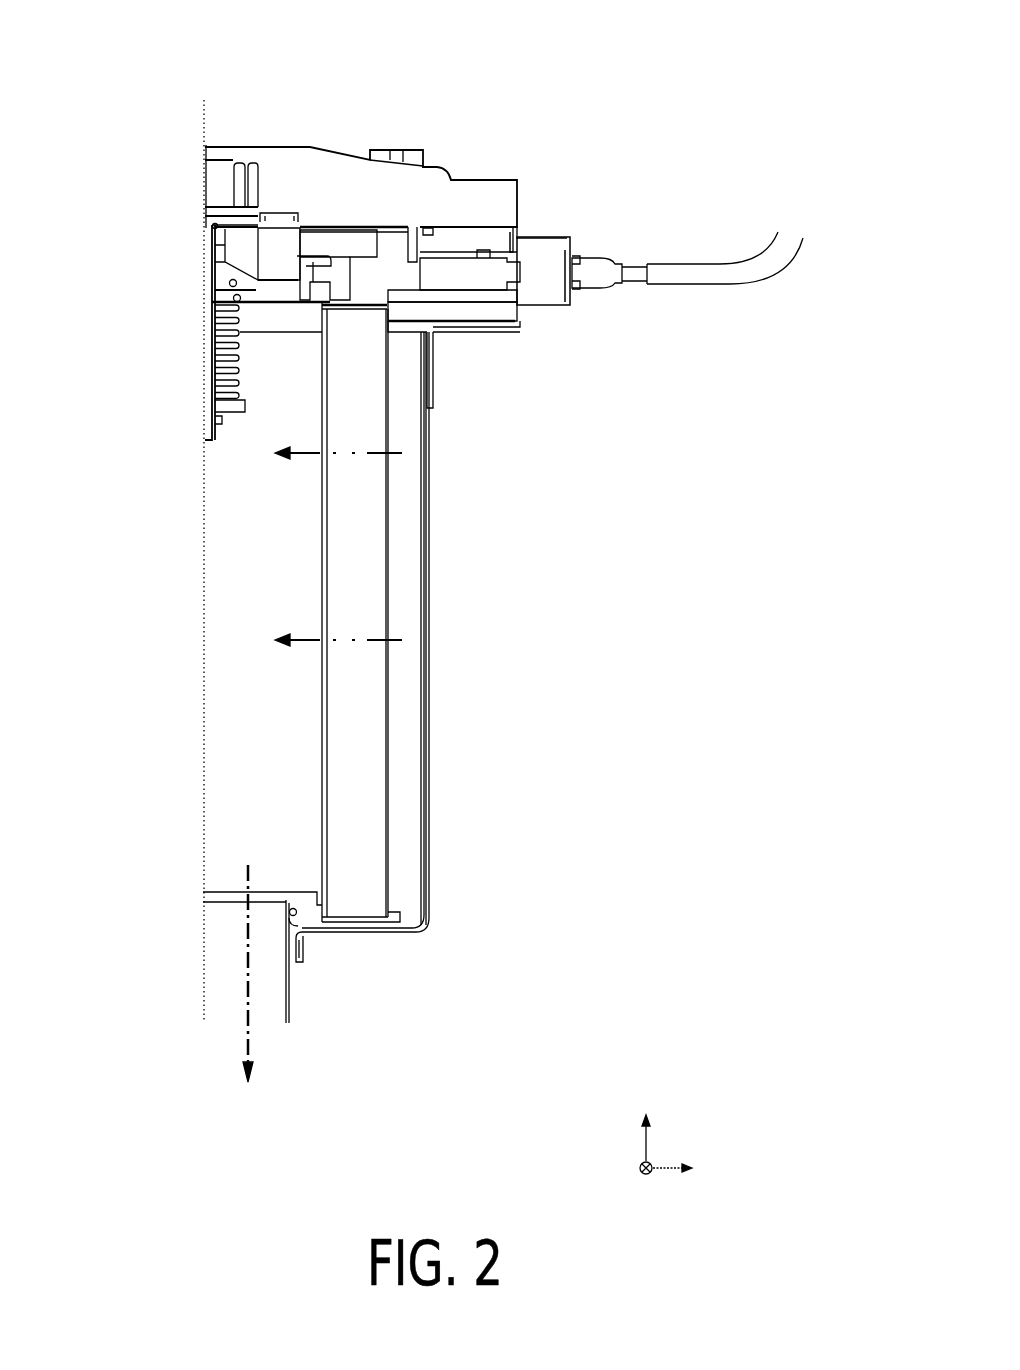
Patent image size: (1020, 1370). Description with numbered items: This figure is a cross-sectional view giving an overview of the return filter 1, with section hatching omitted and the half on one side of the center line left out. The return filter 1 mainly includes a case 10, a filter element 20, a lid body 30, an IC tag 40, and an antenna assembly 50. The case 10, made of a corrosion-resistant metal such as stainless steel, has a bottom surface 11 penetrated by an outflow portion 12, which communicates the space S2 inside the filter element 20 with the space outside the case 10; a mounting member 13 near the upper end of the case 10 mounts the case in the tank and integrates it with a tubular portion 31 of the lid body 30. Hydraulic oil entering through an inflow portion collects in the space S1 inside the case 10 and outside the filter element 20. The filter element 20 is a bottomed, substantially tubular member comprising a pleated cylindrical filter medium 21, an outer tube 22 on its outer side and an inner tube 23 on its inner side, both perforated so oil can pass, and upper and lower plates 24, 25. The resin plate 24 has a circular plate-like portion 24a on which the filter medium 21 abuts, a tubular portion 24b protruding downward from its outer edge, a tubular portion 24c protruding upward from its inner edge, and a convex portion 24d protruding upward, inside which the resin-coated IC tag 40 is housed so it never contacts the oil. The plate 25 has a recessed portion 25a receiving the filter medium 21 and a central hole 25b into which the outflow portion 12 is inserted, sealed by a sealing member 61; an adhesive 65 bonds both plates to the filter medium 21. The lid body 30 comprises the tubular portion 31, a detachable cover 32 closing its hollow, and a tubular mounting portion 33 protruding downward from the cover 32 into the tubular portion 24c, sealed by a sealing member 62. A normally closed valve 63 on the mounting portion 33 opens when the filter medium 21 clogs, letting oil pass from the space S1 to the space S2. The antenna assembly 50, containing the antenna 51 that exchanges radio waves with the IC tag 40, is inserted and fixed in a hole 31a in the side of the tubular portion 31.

The return filter 1 is at (600, 44).
The case 10 is at (423, 933).
The bottom surface 11 is at (363, 930).
The outflow portion 12 is at (300, 963).
The mounting member 13 is at (388, 302).
The filter element 20 is at (623, 533).
The filter medium 21 is at (373, 575).
The outer tube 22 is at (423, 640).
The inner tube 23 is at (320, 680).
The plate 24 is at (597, 477).
The plate-like portion 24a is at (340, 308).
The tubular portion 24b is at (433, 338).
The tubular portion 24c is at (328, 308).
The convex portion 24d is at (372, 308).
The plate 25 is at (325, 908).
The recessed portion 25a is at (330, 897).
The hole 25b is at (268, 925).
The lid body 30 is at (429, 74).
The tubular portion 31 is at (447, 232).
The hole 31a is at (510, 252).
The cover 32 is at (347, 195).
The mounting portion 33 is at (278, 206).
The IC tag 40 is at (482, 323).
The antenna assembly 50 is at (553, 252).
The antenna 51 is at (520, 300).
The sealing member 61 is at (287, 912).
The sealing member 62 is at (297, 269).
The valve 63 is at (213, 279).
The adhesive 65 is at (420, 243).
The space S1 is at (407, 753).
The space S2 is at (285, 558).